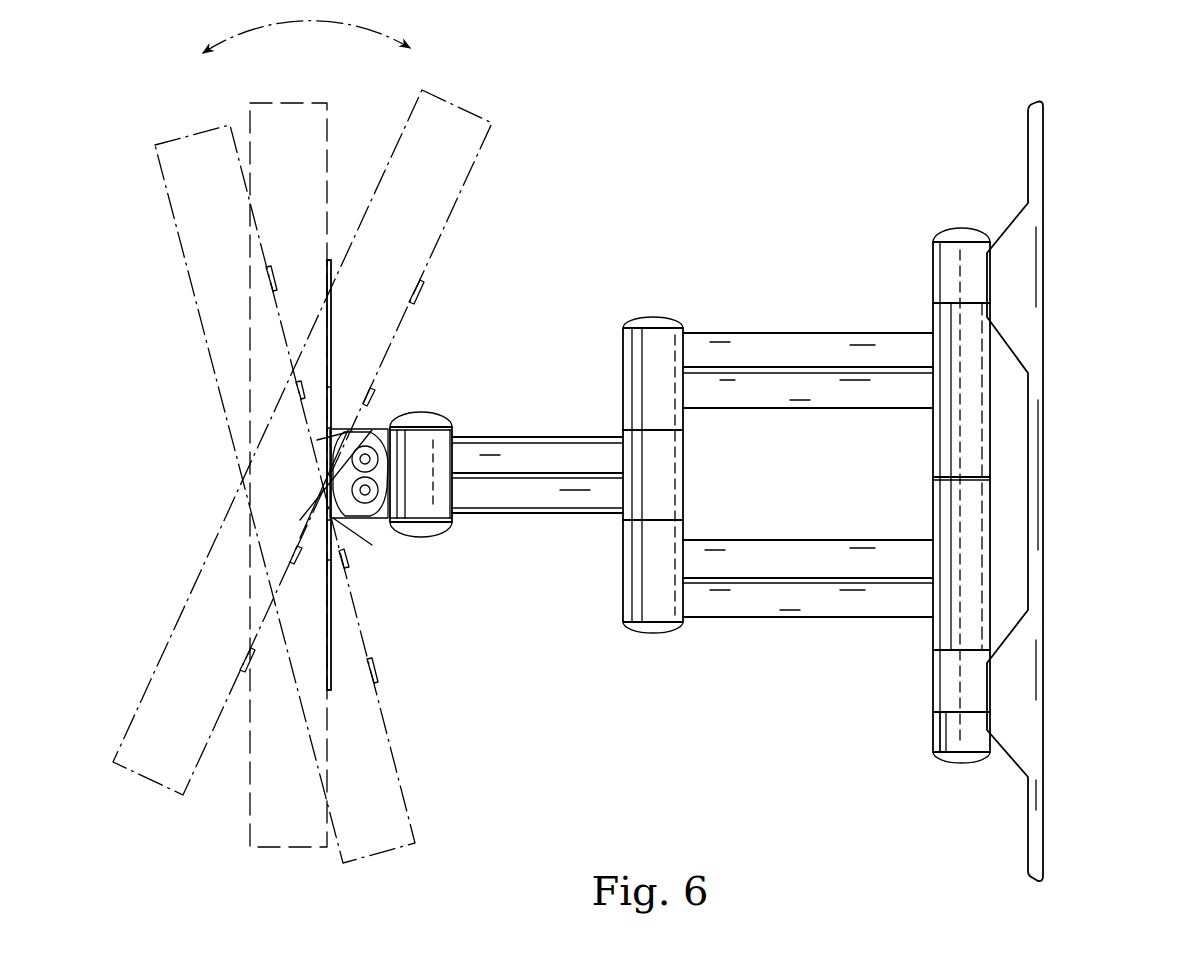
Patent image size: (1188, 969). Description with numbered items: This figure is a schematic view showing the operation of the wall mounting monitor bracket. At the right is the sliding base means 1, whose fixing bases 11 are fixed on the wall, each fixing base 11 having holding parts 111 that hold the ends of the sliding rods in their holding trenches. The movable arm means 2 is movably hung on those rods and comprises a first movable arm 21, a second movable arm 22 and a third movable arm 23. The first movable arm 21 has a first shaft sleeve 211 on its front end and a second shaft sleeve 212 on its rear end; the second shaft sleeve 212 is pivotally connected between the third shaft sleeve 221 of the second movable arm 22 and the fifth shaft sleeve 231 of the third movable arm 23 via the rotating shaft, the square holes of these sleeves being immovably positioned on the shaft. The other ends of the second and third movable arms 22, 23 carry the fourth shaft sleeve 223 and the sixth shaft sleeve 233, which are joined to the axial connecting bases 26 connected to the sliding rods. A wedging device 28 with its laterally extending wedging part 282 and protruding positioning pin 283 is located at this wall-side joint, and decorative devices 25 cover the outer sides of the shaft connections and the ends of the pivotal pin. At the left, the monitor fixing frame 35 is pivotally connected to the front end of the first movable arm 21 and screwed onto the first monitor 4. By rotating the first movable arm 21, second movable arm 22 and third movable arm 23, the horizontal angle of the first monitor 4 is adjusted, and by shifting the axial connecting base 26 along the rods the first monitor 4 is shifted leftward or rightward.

The sliding base means 1 is at (1073, 492).
The fixing base 11 is at (1042, 490).
The holding part 111 is at (998, 263).
The movable arm means 2 is at (750, 483).
The first movable arm 21 is at (543, 507).
The first shaft sleeve 211 is at (443, 450).
The second shaft sleeve 212 is at (663, 485).
The second movable arm 22 is at (863, 402).
The third shaft sleeve 221 is at (637, 357).
The fourth shaft sleeve 223 is at (955, 333).
The third movable arm 23 is at (845, 607).
The fifth shaft sleeve 231 is at (647, 570).
The sixth shaft sleeve 233 is at (947, 518).
The decorative device 25 is at (750, 483).
The axial connecting base 26 is at (933, 250).
The wedging device 28 is at (933, 745).
The wedging part 282 is at (938, 735).
The positioning pin 283 is at (945, 722).
The monitor fixing frame 35 is at (377, 423).
The first monitor 4 is at (262, 816).